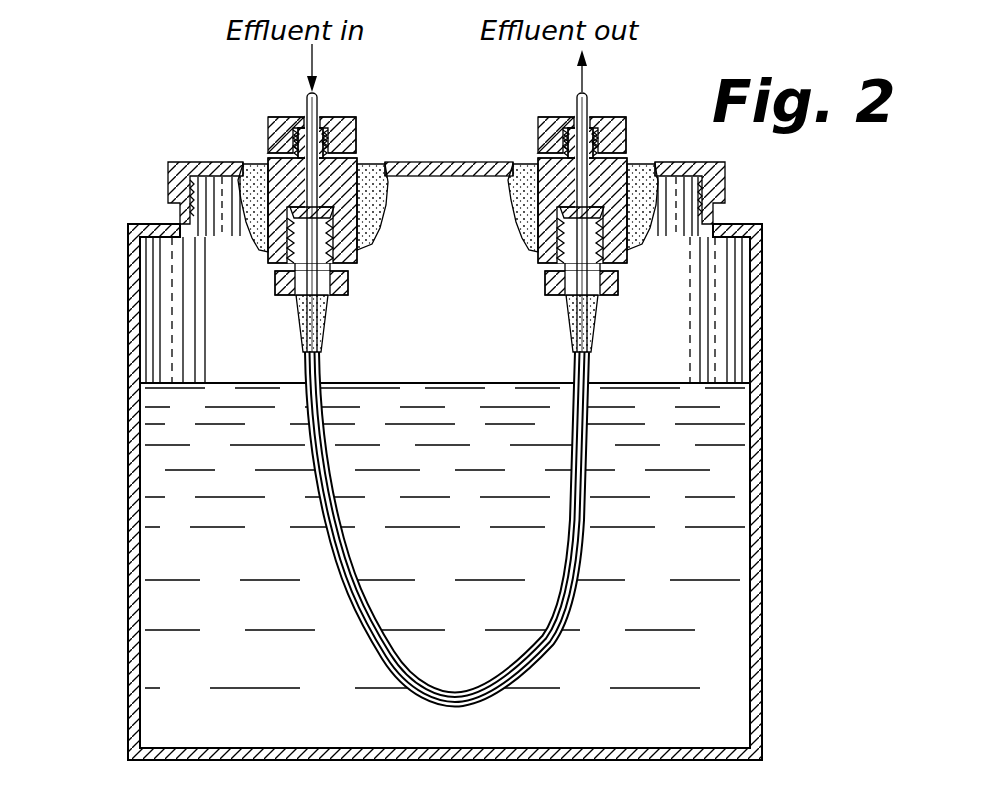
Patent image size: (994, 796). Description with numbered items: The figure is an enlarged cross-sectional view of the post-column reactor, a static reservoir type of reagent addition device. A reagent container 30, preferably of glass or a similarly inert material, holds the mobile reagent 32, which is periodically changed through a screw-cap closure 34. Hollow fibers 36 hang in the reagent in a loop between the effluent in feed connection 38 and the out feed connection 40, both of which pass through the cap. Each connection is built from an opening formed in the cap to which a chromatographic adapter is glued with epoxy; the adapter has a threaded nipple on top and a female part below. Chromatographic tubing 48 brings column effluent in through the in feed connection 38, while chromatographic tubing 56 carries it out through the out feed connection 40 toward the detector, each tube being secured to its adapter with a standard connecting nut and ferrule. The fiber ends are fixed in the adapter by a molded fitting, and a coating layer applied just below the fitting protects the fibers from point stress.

The reagent container 30 is at (128, 545).
The mobile reagent 32 is at (725, 555).
The closure 34 is at (207, 170).
The hollow fibers 36 is at (341, 545).
The effluent in feed connection 38 is at (313, 205).
The out feed connection 40 is at (593, 221).
The chromatographic tubing 48 is at (318, 100).
The chromatographic tubing 56 is at (543, 205).